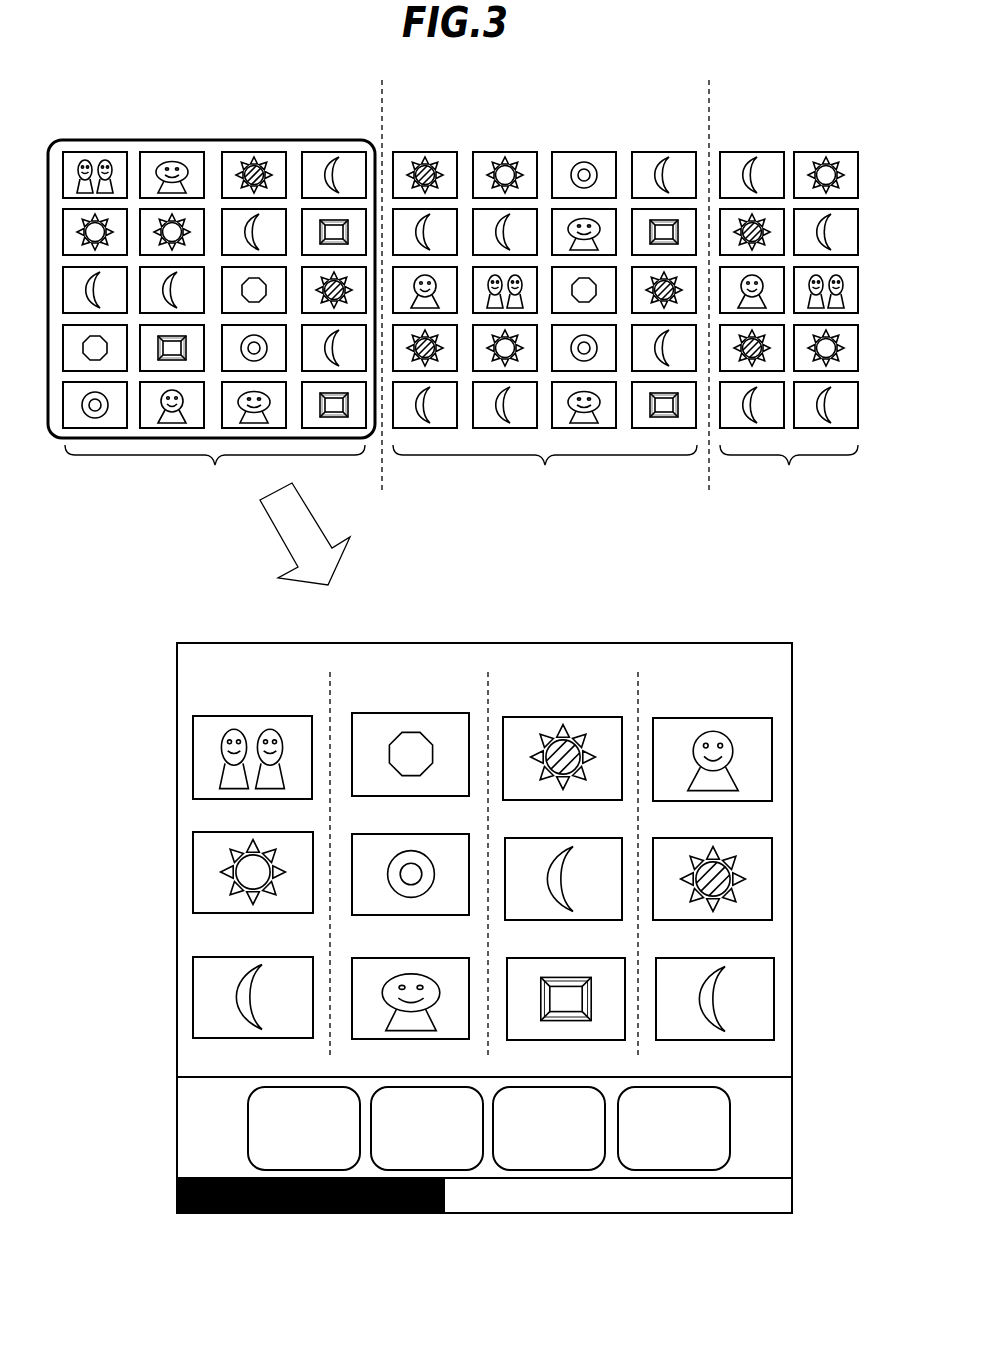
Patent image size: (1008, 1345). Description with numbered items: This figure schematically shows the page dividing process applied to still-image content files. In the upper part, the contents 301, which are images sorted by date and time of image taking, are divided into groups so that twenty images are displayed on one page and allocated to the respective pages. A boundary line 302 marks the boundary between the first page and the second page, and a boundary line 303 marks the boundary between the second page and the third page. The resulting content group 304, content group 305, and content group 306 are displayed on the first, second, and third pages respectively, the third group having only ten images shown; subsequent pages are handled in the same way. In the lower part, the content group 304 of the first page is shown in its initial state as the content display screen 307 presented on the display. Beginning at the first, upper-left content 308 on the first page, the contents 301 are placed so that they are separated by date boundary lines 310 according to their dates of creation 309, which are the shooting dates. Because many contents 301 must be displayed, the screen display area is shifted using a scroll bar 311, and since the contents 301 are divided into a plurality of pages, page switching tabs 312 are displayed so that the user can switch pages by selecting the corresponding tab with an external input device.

The contents 301 is at (97, 152).
The boundary line 302 is at (383, 108).
The boundary line 303 is at (710, 110).
The content group 304 is at (215, 471).
The content group 305 is at (545, 471).
The content group 306 is at (789, 471).
The content display screen 307 is at (487, 643).
The first content 308 is at (193, 717).
The dates of creation 309 is at (256, 660).
The date boundary line 310 is at (333, 687).
The scroll bar 311 is at (236, 1192).
The page switching tabs 312 is at (248, 1125).